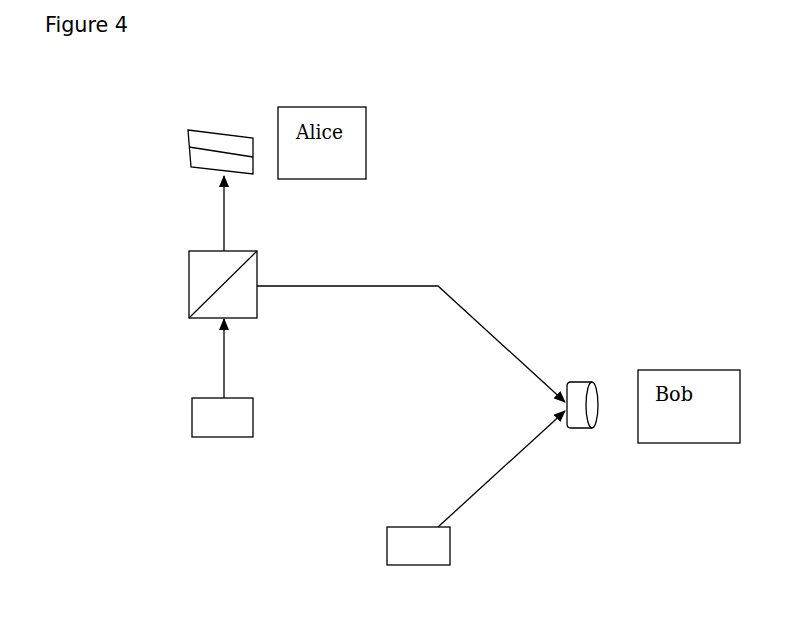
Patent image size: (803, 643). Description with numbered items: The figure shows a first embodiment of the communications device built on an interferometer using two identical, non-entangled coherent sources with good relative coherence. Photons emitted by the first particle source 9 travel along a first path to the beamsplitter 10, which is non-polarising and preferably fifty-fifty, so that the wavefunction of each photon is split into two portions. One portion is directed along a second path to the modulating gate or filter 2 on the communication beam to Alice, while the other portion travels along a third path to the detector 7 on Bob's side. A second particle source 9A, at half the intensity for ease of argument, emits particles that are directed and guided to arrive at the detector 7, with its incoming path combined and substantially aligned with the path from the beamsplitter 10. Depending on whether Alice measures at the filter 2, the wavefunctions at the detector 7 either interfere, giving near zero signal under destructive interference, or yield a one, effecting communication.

The modulating gate 2 is at (220, 128).
The beamsplitter 10 is at (192, 284).
The coherent photon source 9 is at (222, 400).
The second particle source 9A is at (476, 511).
The detector 7 is at (582, 370).